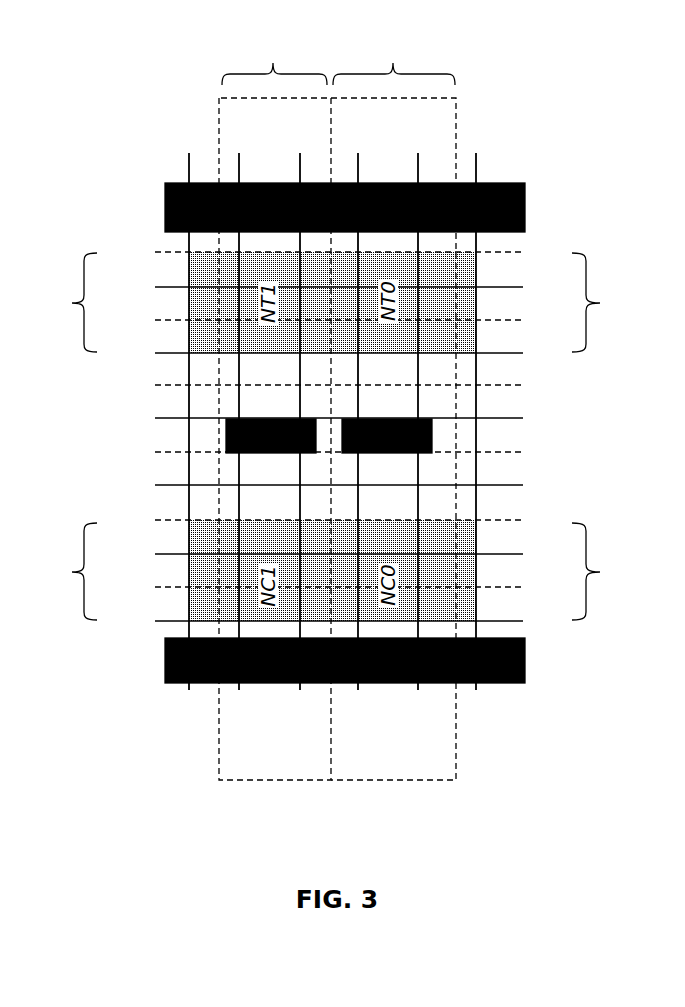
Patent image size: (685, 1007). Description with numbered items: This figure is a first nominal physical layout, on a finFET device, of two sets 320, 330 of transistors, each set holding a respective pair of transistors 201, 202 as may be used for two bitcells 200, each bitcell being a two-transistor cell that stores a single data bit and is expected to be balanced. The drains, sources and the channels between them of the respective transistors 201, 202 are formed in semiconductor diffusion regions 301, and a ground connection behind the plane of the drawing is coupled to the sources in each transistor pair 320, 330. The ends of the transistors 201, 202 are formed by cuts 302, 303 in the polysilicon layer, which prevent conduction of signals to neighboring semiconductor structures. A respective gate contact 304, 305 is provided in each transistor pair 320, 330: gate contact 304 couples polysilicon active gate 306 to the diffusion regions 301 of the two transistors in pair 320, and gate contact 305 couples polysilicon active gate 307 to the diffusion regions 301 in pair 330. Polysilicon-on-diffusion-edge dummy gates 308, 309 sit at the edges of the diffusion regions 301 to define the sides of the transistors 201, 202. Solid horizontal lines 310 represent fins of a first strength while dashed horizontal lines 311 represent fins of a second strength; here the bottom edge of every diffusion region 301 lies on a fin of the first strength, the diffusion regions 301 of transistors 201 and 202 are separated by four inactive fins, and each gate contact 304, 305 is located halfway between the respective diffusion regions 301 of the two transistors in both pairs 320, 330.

The bitcell 200 is at (338, 59).
The transistor 201 is at (270, 532).
The transistor 202 is at (253, 262).
The semiconductor diffusion region 301 is at (334, 436).
The cut 302 is at (525, 660).
The cut 303 is at (525, 202).
The gate contact 304 is at (265, 417).
The gate contact 305 is at (390, 417).
The polysilicon active gate 306 is at (240, 148).
The polysilicon active gate 307 is at (358, 148).
The PODE dummy gate 308 is at (188, 167).
The PODE dummy gate 309 is at (477, 167).
The solid horizontal line 310 is at (492, 287).
The dashed horizontal line 311 is at (175, 252).
The transistor pair 320 is at (288, 782).
The transistor pair 330 is at (400, 783).